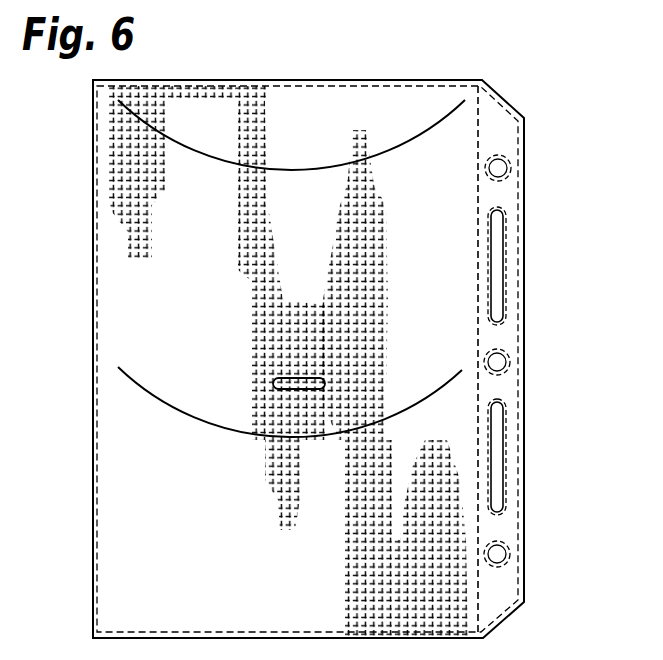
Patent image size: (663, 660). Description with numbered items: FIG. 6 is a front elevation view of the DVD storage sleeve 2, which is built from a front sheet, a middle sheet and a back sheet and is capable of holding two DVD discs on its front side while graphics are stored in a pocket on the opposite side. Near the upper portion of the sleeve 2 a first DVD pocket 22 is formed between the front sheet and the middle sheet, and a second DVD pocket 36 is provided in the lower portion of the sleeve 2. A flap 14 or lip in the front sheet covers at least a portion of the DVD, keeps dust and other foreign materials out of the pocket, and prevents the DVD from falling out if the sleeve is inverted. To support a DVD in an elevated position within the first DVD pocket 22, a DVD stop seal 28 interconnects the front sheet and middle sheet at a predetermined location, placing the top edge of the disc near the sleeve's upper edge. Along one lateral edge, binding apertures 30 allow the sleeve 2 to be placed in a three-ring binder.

The DVD storage sleeve 2 is at (540, 84).
The flap 14 is at (410, 107).
The first DVD pocket 22 is at (210, 148).
The DVD stop seal 28 is at (273, 384).
The binding apertures 30 is at (513, 170).
The second DVD pocket 36 is at (148, 392).